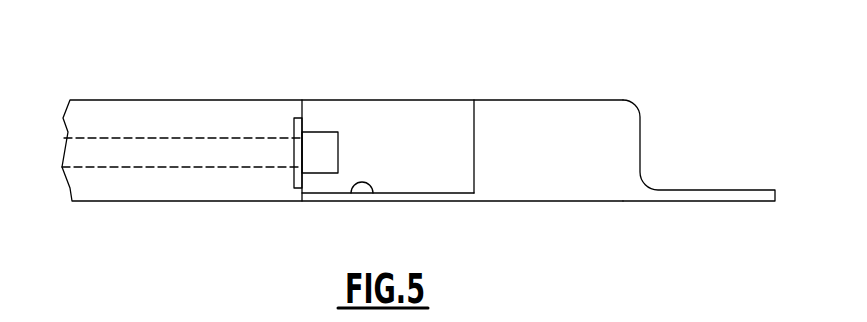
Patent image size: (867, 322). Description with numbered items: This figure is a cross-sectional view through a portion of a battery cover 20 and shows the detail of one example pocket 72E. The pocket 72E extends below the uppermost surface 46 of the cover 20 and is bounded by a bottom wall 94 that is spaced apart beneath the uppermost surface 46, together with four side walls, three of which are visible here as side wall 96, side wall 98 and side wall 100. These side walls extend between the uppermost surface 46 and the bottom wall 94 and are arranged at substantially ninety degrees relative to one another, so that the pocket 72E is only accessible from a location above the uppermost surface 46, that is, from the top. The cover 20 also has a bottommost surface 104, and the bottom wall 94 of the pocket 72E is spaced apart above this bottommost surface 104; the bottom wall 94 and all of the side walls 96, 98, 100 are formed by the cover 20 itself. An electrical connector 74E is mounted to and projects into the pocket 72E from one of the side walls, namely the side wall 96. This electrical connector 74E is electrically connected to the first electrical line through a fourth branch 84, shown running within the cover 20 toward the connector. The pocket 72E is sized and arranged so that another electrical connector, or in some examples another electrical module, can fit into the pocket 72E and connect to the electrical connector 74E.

The cover 20 is at (418, 147).
The uppermost surface 46 is at (342, 111).
The fourth branch 84 is at (155, 152).
The side wall 96 is at (304, 108).
The electrical connector 74E is at (323, 150).
The side wall 98 is at (385, 108).
The side wall 100 is at (473, 130).
The bottom wall 94 is at (352, 185).
The pocket 72E is at (405, 172).
The bottommost surface 104 is at (567, 202).